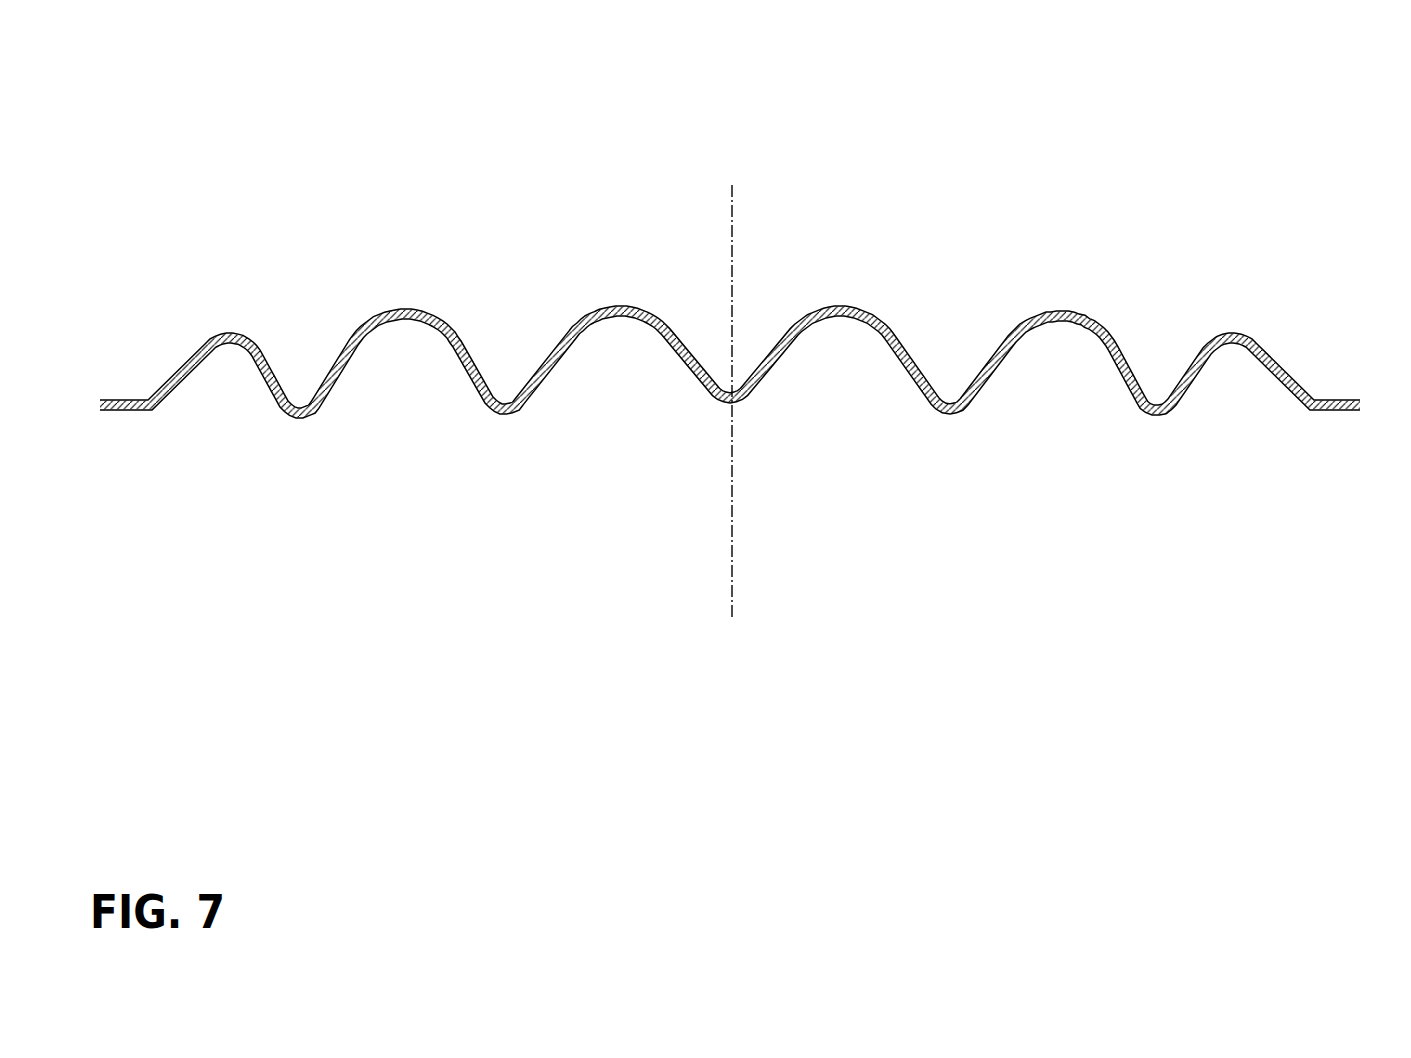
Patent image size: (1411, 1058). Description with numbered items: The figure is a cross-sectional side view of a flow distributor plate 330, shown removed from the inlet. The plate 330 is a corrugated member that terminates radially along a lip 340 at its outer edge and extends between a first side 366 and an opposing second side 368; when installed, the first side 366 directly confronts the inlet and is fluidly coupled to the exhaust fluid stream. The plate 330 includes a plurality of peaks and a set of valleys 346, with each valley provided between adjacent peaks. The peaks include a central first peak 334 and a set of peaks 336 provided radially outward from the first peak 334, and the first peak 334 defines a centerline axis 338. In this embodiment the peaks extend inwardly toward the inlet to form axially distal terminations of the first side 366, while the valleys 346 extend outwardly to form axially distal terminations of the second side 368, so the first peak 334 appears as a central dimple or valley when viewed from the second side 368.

The plate 330 is at (1266, 48).
The first peak 334 is at (727, 405).
The set of peaks 336 is at (510, 418).
The centerline axis 338 is at (733, 255).
The lip 340 is at (1362, 402).
The set of valleys 346 is at (393, 310).
The first side 366 is at (267, 438).
The second side 368 is at (622, 291).